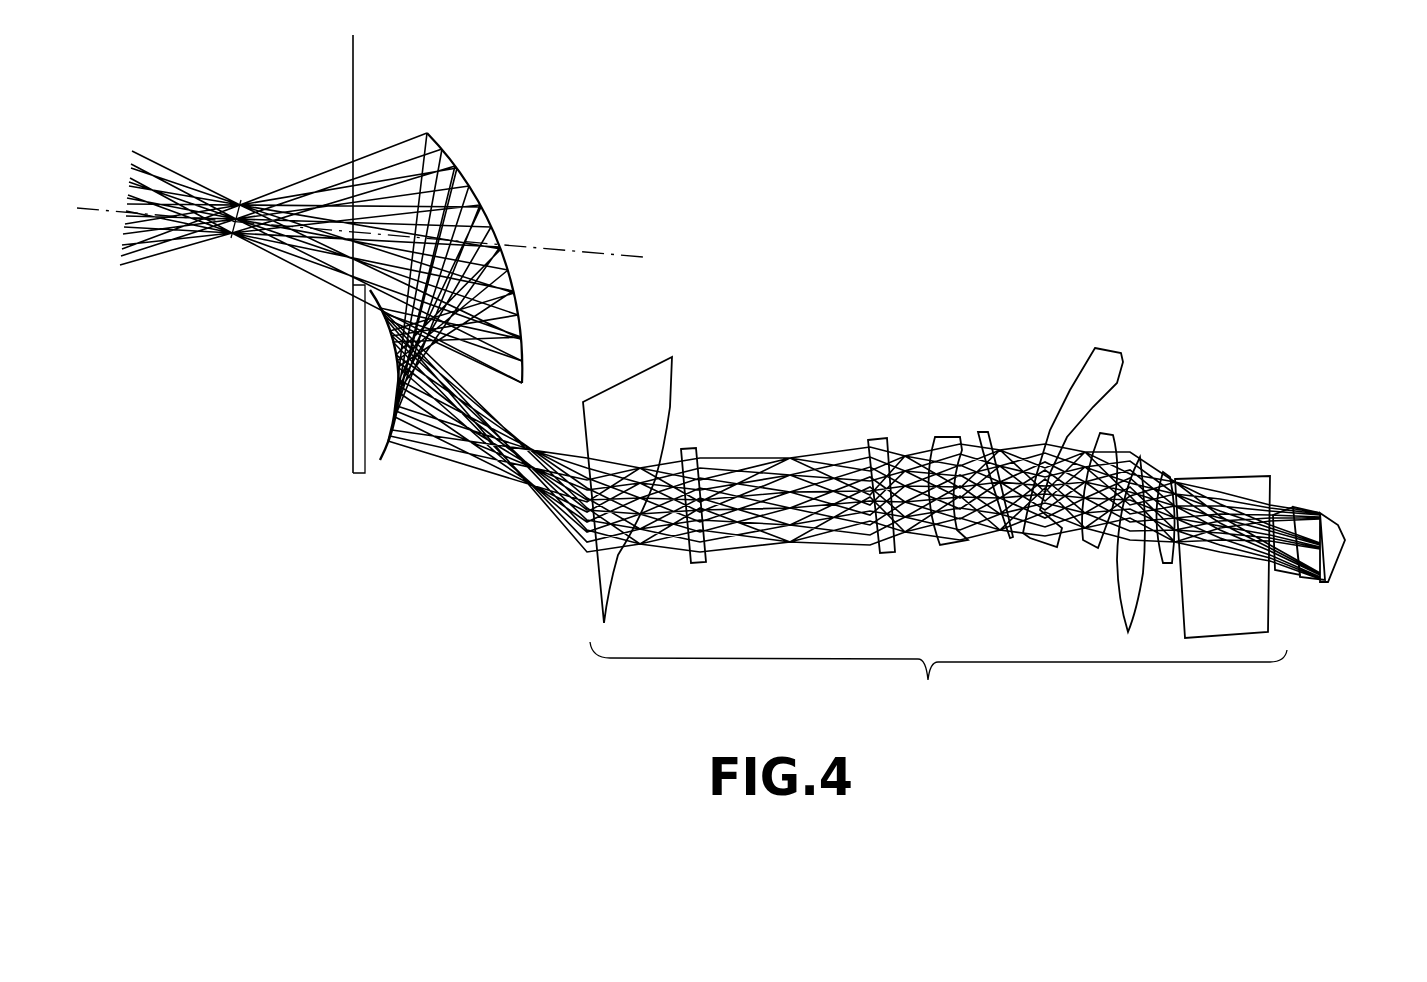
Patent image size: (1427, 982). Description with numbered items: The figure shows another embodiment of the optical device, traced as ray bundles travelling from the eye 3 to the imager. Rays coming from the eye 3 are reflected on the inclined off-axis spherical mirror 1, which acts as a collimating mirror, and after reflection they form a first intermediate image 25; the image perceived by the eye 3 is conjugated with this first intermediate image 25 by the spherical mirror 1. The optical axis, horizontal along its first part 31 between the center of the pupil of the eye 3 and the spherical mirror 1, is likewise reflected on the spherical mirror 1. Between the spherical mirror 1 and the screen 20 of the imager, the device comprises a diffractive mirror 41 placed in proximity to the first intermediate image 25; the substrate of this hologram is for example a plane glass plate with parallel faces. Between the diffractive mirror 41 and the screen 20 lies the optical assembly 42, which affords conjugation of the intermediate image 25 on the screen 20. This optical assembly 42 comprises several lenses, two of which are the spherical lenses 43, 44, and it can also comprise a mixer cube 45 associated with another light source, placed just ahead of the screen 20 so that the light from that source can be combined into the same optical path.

The off-axis spherical mirror 1 is at (428, 133).
The eye 3 is at (233, 240).
The screen of the imager 20 is at (1337, 547).
The first intermediate image 25 is at (381, 462).
The first part of the optical axis 31 is at (368, 231).
The diffractive mirror 41 is at (355, 474).
The optical assembly 42 is at (935, 533).
The spherical lens 43 is at (647, 397).
The spherical lens 44 is at (870, 430).
The mixer cube 45 is at (1222, 482).